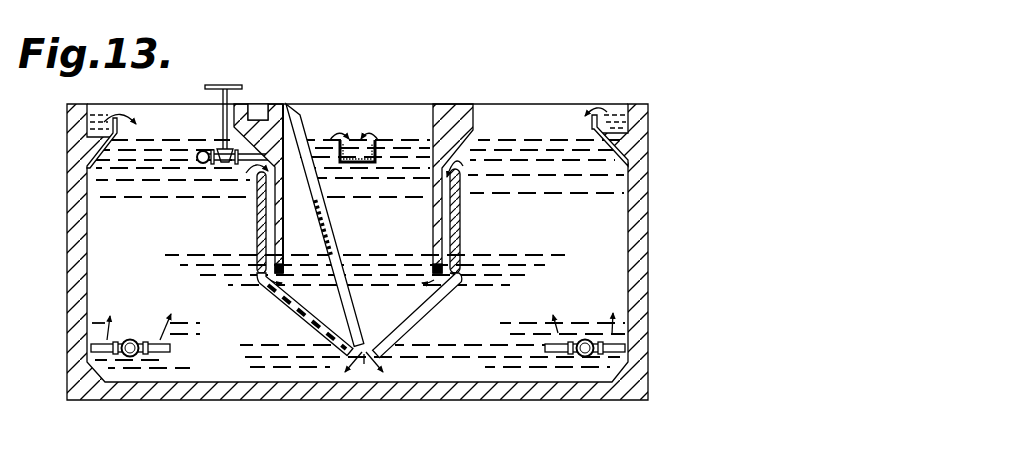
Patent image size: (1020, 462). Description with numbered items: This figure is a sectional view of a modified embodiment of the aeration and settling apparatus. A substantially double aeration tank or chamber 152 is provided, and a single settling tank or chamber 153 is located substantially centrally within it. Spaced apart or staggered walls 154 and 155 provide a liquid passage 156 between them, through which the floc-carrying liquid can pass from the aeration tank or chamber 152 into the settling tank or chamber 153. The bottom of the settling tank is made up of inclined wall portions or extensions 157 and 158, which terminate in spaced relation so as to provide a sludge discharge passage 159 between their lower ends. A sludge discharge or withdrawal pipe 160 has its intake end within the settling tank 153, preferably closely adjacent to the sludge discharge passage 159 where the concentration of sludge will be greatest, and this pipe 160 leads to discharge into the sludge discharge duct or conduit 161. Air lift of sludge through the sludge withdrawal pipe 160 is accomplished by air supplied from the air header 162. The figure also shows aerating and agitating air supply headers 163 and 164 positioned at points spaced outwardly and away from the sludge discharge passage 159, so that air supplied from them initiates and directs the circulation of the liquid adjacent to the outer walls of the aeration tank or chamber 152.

The aeration tank or chamber 152 is at (531, 146).
The settling tank or chamber 153 is at (392, 150).
The wall 154 is at (259, 245).
The wall 155 is at (283, 243).
The liquid passage 156 is at (257, 208).
The inclined wall portion or extension 157 is at (293, 315).
The inclined wall portion or extension 158 is at (423, 311).
The sludge discharge passage 159 is at (366, 379).
The sludge discharge or withdrawal pipe 160 is at (327, 243).
The sludge discharge duct or conduit 161 is at (265, 101).
The air header 162 is at (210, 152).
The left drain valve 163 is at (145, 341).
The right drain valve 164 is at (585, 340).